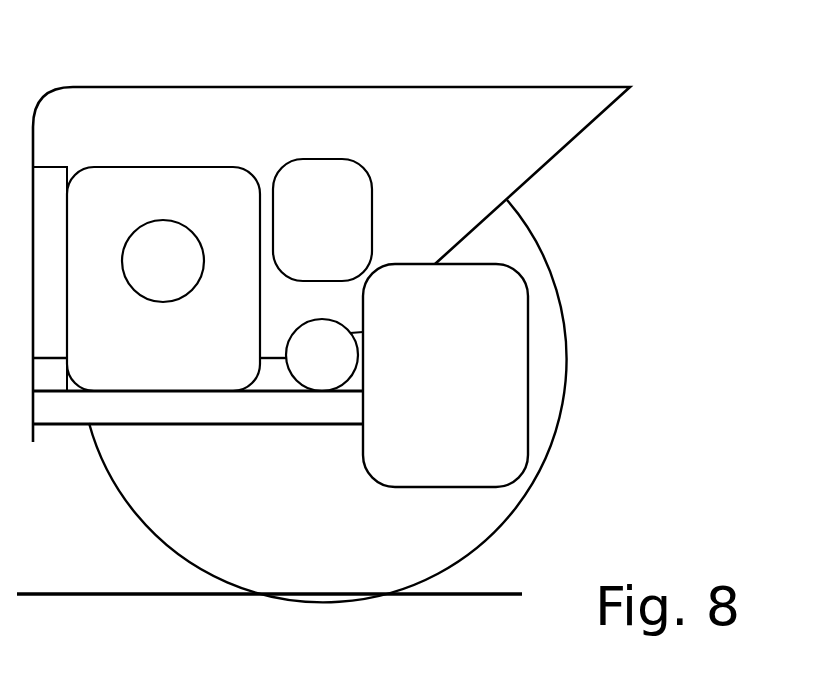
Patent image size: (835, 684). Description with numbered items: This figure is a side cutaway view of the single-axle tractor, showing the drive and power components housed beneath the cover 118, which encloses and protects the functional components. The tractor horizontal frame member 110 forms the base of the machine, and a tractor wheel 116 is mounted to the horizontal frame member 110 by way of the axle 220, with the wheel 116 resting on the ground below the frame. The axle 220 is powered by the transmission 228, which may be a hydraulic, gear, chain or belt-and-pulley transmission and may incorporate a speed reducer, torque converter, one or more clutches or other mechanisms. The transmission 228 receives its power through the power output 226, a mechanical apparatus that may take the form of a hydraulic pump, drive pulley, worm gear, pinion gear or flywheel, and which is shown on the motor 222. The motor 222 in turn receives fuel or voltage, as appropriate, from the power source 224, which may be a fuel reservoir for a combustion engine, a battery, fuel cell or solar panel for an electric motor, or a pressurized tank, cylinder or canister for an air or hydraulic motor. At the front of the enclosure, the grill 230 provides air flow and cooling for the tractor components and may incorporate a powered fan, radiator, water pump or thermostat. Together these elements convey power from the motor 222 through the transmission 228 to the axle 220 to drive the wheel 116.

The tractor horizontal frame member 110 is at (143, 425).
The tractor wheel 116 is at (556, 283).
The cover 118 is at (445, 87).
The axle 220 is at (287, 360).
The motor 222 is at (236, 167).
The power source 224 is at (319, 159).
The power output 226 is at (195, 288).
The transmission 228 is at (529, 393).
The grill 230 is at (47, 167).